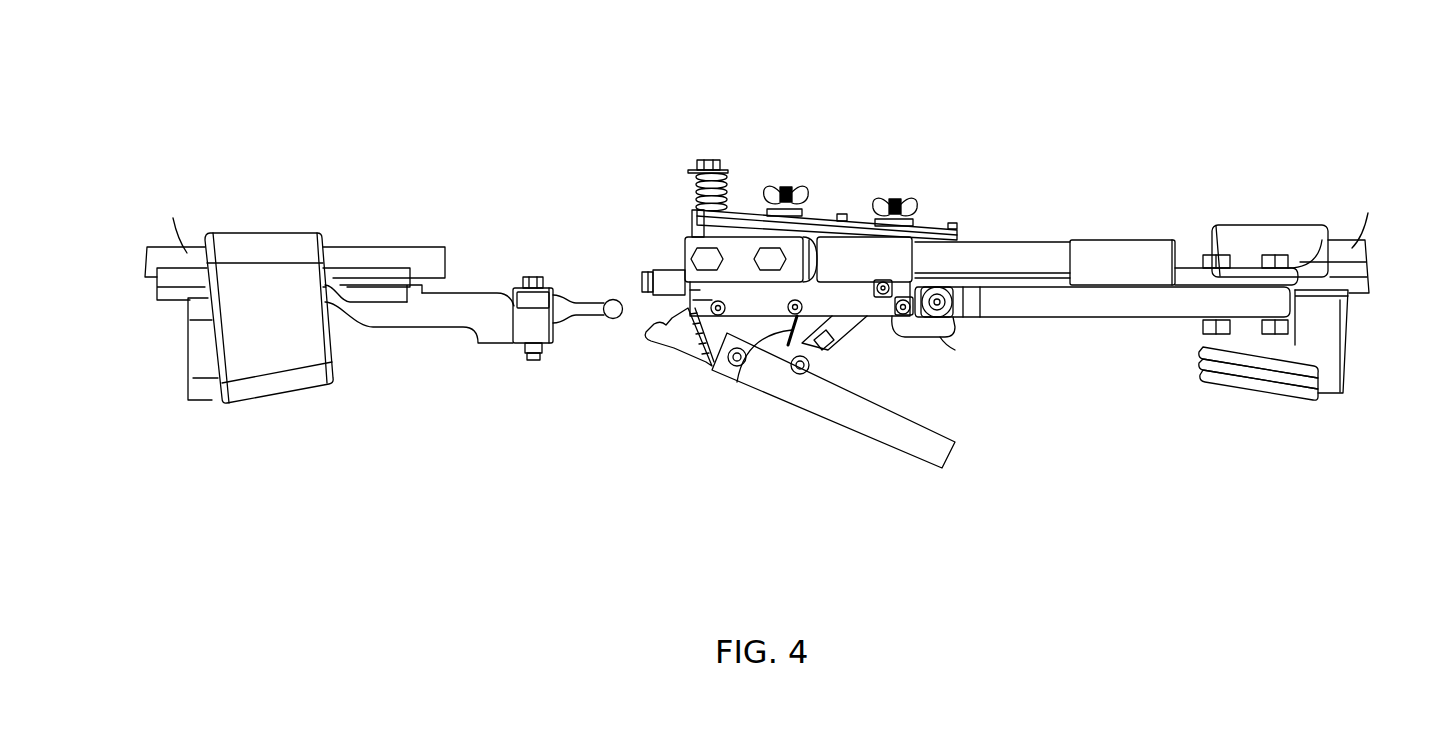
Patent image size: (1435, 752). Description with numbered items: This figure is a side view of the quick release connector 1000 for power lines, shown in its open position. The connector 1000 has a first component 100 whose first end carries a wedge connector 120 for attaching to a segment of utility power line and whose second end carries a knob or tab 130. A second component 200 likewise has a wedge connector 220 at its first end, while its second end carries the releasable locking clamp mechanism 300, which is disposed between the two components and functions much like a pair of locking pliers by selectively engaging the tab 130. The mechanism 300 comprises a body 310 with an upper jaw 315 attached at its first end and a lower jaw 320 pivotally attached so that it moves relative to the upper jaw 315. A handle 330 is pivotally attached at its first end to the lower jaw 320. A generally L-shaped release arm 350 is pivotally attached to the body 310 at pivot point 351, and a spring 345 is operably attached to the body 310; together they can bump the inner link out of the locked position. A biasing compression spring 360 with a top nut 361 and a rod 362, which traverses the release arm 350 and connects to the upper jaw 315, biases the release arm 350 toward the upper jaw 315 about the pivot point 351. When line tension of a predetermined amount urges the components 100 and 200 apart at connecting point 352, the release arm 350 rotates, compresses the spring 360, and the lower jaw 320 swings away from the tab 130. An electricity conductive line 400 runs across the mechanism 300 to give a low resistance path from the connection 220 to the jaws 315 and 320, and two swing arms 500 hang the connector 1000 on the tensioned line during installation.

The quick release connector 1000 is at (604, 97).
The first component 100 is at (492, 497).
The wedge connector 120 is at (265, 240).
The tab 130 is at (613, 300).
The second component 200 is at (1350, 538).
The wedge connector 220 is at (1265, 236).
The locking clamp mechanism 300 is at (950, 480).
The body 310 is at (836, 297).
The upper jaw 315 is at (665, 275).
The lower jaw 320 is at (670, 336).
The handle 330 is at (775, 392).
The spring 345 is at (740, 385).
The release arm 350 is at (939, 318).
The pivot point 351 is at (900, 318).
The connecting point 352 is at (958, 324).
The biasing compression spring 360 is at (696, 186).
The top nut 361 is at (705, 159).
The rod 362 is at (729, 171).
The electricity conductive line 400 is at (1031, 256).
The swing arms 500 is at (821, 210).